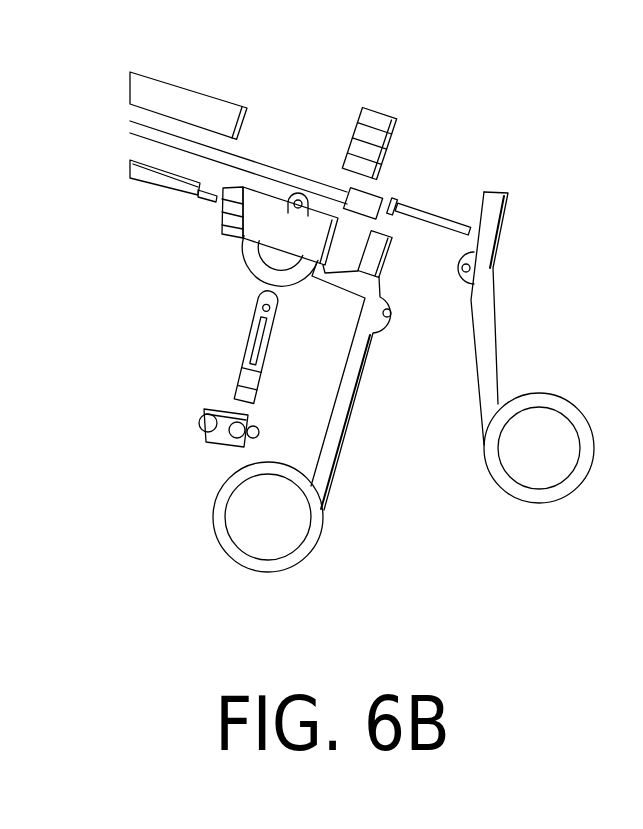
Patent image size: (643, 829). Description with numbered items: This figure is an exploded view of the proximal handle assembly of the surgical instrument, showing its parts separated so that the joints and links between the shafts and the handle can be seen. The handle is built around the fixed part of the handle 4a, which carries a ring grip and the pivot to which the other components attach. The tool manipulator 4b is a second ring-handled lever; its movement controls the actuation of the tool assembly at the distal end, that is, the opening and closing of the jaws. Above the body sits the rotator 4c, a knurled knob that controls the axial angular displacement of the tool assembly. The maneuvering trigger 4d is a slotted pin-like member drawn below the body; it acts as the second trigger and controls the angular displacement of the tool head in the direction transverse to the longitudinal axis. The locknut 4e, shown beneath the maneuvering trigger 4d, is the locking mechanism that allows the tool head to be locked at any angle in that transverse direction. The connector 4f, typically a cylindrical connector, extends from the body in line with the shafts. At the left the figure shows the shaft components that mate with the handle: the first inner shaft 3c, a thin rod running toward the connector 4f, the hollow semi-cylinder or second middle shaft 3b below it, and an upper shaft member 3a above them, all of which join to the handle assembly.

The upper shaft member 3a is at (207, 84).
The second middle shaft 3b is at (148, 190).
The third inner shaft 3c is at (284, 166).
The fixed part of the handle 4a is at (340, 492).
The tool manipulator 4b is at (502, 282).
The rotator 4c is at (397, 133).
The maneuvering trigger 4d is at (238, 343).
The locknut 4e is at (193, 422).
The connector 4f is at (442, 208).